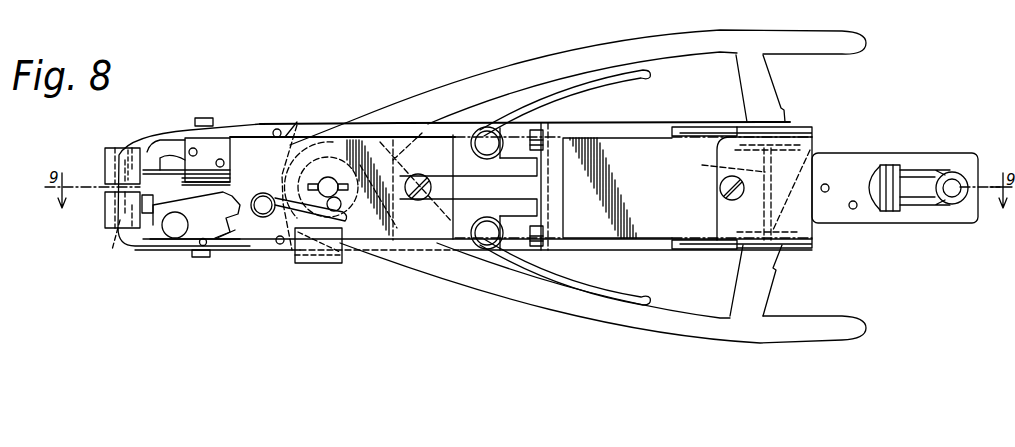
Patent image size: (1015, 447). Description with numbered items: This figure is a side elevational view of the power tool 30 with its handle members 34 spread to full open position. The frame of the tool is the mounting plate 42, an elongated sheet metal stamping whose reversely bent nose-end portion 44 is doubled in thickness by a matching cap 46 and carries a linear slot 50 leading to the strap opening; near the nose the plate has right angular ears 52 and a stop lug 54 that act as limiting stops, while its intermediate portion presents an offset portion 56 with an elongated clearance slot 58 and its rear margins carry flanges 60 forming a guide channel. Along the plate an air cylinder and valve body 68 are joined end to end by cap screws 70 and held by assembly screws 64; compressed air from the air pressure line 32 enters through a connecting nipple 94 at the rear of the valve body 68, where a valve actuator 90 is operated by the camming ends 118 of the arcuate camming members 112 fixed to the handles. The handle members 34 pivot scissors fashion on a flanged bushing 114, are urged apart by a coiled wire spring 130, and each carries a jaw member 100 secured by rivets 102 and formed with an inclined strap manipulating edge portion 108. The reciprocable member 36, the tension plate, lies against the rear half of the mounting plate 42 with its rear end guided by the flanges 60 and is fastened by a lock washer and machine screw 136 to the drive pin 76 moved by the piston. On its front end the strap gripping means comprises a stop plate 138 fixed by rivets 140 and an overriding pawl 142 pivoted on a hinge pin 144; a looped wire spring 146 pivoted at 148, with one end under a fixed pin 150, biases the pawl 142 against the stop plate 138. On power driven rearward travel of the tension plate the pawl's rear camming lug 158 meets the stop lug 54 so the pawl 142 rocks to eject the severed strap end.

The power tool 30 is at (525, 43).
The air pressure line 32 is at (938, 208).
The handle members 34 is at (702, 38).
The reciprocable member 36 is at (381, 140).
The mounting plate 42 is at (635, 127).
The nose-end portion 44 is at (104, 168).
The cap 46 is at (104, 218).
The linear slot 50 is at (131, 162).
The ears 52 is at (208, 118).
The stop lug 54 is at (326, 265).
The offset portion 56 is at (522, 246).
The clearance slot 58 is at (556, 189).
The flange 60 is at (795, 133).
The assembly screws 64 is at (720, 188).
The valve body 68 is at (940, 160).
The cap screws 70 is at (525, 126).
The drive pin 76 is at (445, 187).
The valve actuator 90 is at (721, 165).
The connecting nipple 94 is at (888, 212).
The jaw members 100 is at (163, 135).
The rivets 102 is at (278, 129).
The strap manipulating edge portion 108 is at (119, 225).
The arcuate camming members 112 is at (768, 84).
The flanged bushing 114 is at (332, 158).
The camming ends 118 is at (821, 149).
The coiled wire spring 130 is at (613, 80).
The lock washer and machine screw 136 is at (423, 175).
The stop plate 138 is at (215, 142).
The rivets 140 is at (230, 160).
The overriding pawl 142 is at (165, 242).
The hinge pin 144 is at (175, 238).
The looped wire spring 146 is at (260, 217).
The pivot 148 is at (268, 216).
The fixed pin 150 is at (350, 253).
The camming lug 158 is at (223, 243).